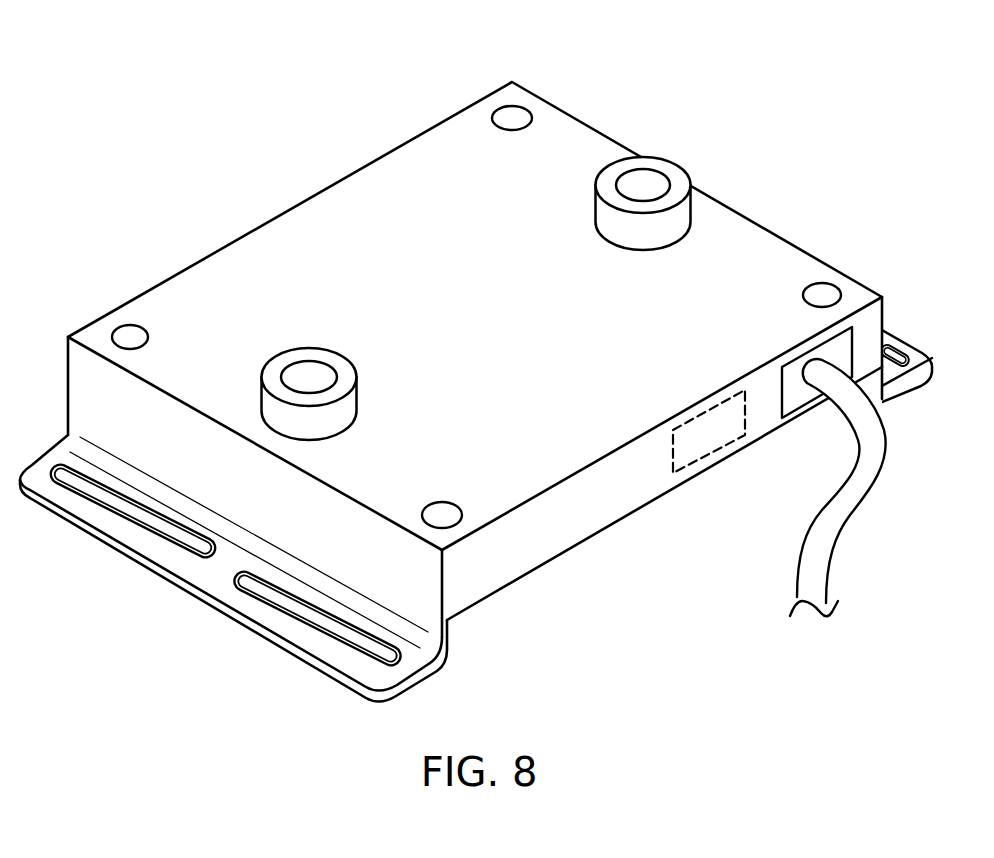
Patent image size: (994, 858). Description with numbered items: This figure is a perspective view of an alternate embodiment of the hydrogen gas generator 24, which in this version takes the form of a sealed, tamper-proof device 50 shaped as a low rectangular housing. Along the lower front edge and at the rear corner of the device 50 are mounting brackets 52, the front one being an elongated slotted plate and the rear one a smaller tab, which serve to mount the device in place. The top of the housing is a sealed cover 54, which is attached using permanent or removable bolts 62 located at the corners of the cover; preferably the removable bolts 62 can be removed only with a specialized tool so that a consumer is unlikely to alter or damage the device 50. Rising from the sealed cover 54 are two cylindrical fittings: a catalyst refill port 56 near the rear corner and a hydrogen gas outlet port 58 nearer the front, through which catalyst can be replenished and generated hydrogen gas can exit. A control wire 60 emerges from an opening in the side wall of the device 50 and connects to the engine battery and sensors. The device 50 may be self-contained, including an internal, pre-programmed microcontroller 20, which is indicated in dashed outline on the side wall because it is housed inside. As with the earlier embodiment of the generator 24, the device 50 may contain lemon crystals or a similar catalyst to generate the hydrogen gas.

The microcontroller 20 is at (696, 445).
The hydrogen gas generator 24 is at (357, 77).
The sealed, tamper-proof device 50 is at (292, 207).
The mounting brackets 52 is at (912, 347).
The sealed cover 54 is at (449, 326).
The catalyst refill port 56 is at (672, 171).
The hydrogen gas outlet port 58 is at (273, 367).
The control wire 60 is at (806, 542).
The bolts 62 is at (520, 118).